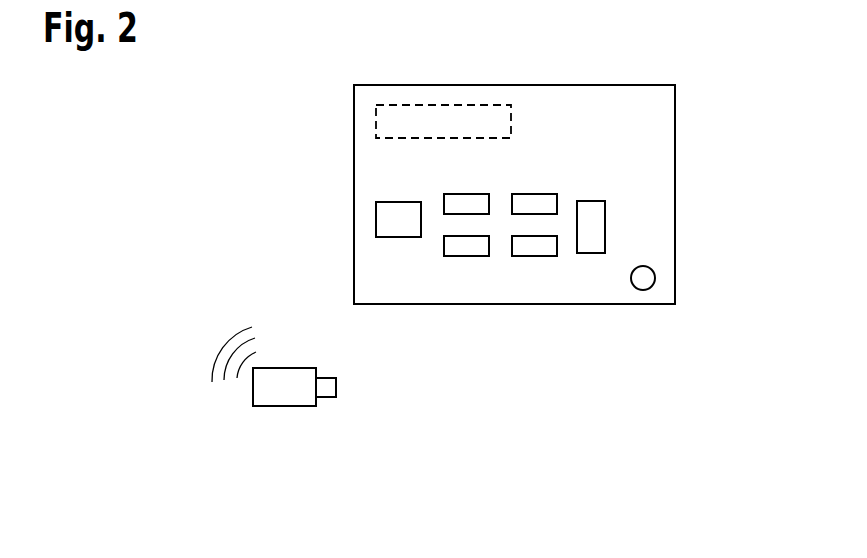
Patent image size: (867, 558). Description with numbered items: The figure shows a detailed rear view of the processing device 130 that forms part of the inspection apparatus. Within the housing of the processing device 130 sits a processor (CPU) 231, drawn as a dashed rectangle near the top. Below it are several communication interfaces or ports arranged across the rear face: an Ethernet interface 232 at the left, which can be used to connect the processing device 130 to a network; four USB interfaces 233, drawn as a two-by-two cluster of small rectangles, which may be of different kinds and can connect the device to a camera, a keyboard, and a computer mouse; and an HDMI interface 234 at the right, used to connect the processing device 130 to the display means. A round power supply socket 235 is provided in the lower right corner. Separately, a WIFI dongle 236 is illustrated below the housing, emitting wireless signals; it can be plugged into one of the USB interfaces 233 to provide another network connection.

The processing device 130 is at (675, 118).
The processor (CPU) 231 is at (376, 123).
The Ethernet interface 232 is at (376, 218).
The USB interfaces 233 is at (497, 268).
The HDMI interface 234 is at (605, 223).
The power supply socket 235 is at (655, 277).
The WIFI dongle 236 is at (283, 406).